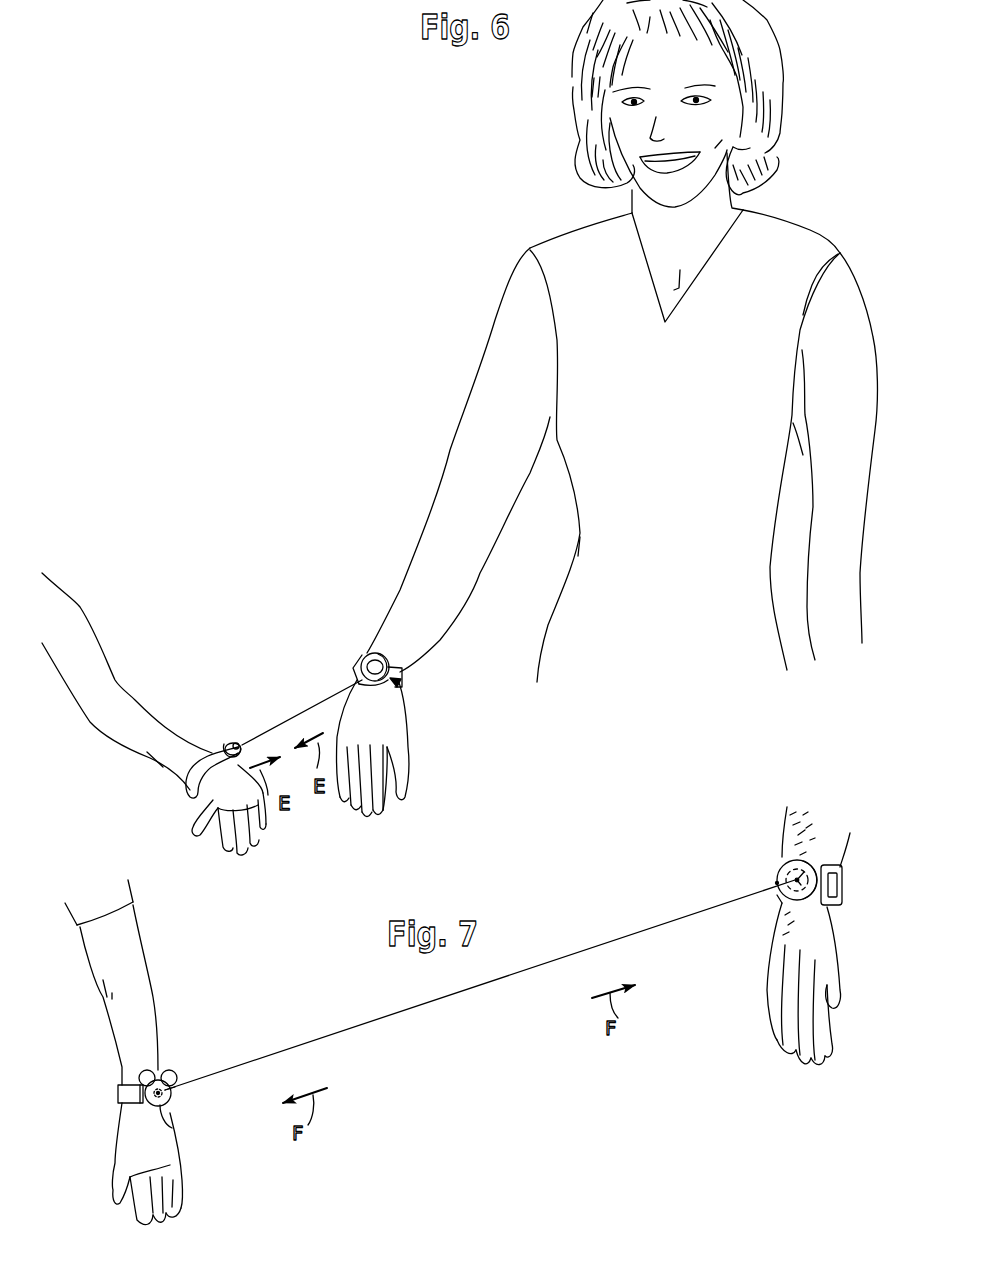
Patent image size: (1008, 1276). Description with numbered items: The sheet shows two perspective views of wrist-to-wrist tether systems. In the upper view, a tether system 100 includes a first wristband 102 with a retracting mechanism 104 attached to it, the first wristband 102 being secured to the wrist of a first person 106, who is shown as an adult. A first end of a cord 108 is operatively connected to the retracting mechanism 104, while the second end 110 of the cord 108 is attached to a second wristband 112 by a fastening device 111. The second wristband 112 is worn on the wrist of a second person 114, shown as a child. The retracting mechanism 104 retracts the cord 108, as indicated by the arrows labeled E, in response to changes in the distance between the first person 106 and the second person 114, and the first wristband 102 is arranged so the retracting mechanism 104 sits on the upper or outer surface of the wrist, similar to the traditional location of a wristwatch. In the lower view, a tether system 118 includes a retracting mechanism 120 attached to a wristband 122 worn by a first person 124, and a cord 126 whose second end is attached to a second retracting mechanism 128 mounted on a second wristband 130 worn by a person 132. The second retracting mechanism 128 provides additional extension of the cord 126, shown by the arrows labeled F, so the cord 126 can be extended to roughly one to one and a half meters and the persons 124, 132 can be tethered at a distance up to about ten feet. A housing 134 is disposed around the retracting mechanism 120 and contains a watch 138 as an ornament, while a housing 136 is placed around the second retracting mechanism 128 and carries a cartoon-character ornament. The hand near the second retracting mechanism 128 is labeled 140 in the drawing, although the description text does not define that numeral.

In FIG. 6, the tether system 100 is at (367, 348).
In FIG. 6, the first wristband 102 is at (398, 668).
In FIG. 6, the retracting mechanism 104 is at (360, 660).
In FIG. 6, the first person 106 is at (453, 333).
In FIG. 6, the cord 108 is at (318, 700).
In FIG. 6, the second end of cord 110 is at (223, 733).
In FIG. 6, the fastening device 111 is at (207, 732).
In FIG. 6, the second wristband 112 is at (187, 787).
In FIG. 6, the second person 114 is at (108, 628).
In FIG. 7, the tether system 118 is at (630, 872).
In FIG. 7, the retracting mechanism 120 is at (775, 852).
In FIG. 7, the wristband 122 is at (832, 888).
In FIG. 7, the first person 124 is at (780, 967).
In FIG. 7, the cord 126 is at (597, 947).
In FIG. 7, the second retracting mechanism 128 is at (182, 1055).
In FIG. 7, the second wristband 130 is at (118, 1090).
In FIG. 7, the person 132 is at (145, 998).
In FIG. 7, the housing 134 is at (767, 907).
In FIG. 7, the housing 136 is at (178, 1107).
In FIG. 7, the watch 138 is at (777, 883).
In FIG. 7, the second user's hand 140 is at (157, 1120).